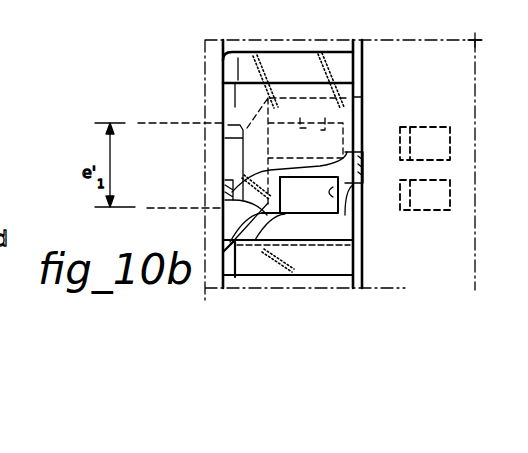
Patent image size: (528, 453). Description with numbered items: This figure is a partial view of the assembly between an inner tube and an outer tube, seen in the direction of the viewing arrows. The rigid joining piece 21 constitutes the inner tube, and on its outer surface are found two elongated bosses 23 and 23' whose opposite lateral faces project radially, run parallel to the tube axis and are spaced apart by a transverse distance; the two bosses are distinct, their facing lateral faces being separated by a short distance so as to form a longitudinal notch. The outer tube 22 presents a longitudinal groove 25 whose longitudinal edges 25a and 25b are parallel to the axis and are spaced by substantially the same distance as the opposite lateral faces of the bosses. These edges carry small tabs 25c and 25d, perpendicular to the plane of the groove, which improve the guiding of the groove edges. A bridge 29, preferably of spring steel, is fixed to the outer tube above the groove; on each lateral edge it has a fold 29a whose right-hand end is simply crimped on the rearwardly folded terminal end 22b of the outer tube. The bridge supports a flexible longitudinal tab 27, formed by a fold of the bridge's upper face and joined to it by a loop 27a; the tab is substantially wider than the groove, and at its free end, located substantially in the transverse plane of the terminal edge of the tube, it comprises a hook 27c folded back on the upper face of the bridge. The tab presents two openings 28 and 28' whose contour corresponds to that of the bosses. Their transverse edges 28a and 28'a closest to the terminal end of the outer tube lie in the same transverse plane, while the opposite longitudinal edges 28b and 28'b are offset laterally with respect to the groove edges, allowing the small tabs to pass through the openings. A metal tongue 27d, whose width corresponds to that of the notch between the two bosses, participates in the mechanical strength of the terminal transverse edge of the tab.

The rigid joining piece 21 is at (467, 252).
The outer tube 22 is at (261, 45).
The terminal end of the outer tube 22b is at (376, 34).
The elongated boss 23 is at (454, 143).
The elongated boss 23' is at (457, 200).
The longitudinal groove 25 is at (368, 128).
The longitudinal edge of the groove 25a is at (222, 143).
The longitudinal edge of the groove 25b is at (362, 223).
The small tab 25c is at (364, 76).
The small tab 25d is at (345, 210).
The flexible longitudinal tab 27 is at (362, 253).
The loop 27a is at (243, 182).
The hook 27c is at (363, 168).
The metal tongue 27d is at (357, 187).
The opening 28 is at (214, 186).
The opening 28' is at (201, 286).
The transverse edge of the opening 28a is at (360, 143).
The transverse edge of the opening 28'a is at (415, 252).
The longitudinal edge of the opening 28b is at (223, 90).
The longitudinal edge of the opening 28'b is at (261, 280).
The bridge 29 is at (225, 109).
The fold 29a is at (318, 34).